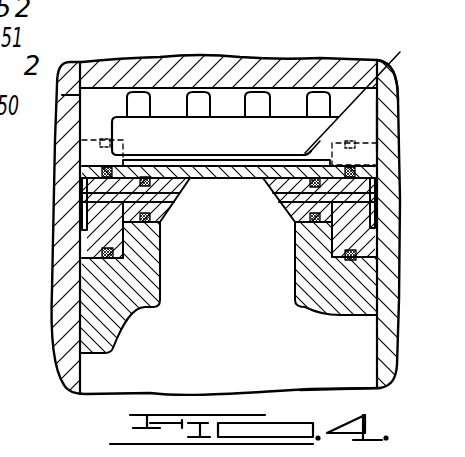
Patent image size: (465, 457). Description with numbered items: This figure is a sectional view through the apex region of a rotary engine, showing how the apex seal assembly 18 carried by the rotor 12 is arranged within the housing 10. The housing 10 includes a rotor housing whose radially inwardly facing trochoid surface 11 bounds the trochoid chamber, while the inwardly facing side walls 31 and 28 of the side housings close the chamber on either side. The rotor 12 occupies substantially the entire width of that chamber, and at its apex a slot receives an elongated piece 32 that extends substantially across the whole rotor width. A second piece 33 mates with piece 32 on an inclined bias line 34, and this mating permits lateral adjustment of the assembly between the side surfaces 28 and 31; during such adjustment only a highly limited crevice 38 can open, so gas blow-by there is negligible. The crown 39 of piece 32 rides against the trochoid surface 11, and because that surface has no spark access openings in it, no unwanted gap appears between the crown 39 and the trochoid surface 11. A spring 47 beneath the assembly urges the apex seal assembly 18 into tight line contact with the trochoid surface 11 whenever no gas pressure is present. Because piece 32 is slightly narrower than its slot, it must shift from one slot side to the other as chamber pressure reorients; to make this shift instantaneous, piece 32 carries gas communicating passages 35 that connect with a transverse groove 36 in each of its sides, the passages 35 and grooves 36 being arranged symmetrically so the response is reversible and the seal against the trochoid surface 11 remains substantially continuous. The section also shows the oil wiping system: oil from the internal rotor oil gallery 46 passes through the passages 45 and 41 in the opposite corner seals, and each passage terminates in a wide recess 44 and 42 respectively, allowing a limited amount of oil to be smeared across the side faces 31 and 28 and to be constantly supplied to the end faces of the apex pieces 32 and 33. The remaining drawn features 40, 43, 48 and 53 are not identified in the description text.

The housing 10 is at (117, 56).
The trochoid surface 11 is at (178, 89).
The rotor 12 is at (350, 352).
The apex seal assembly 18 is at (343, 90).
The side wall 28 is at (378, 150).
The side wall 31 is at (82, 133).
The elongated piece 32 is at (250, 110).
The piece 33 is at (363, 125).
The bias line 34 is at (393, 90).
The gas communicating passages 35 is at (140, 90).
The transverse groove 36 is at (147, 127).
The crevice 38 is at (363, 88).
The crown 39 is at (236, 98).
The piston ring 40 is at (353, 237).
The passage 41 is at (358, 202).
The recess 42 is at (375, 222).
The piston body 43 is at (90, 237).
The recess 44 is at (85, 220).
The passage 45 is at (167, 200).
The internal rotor oil gallery 46 is at (297, 272).
The spring 47 is at (247, 172).
The seal 48 is at (212, 165).
The edge 53 is at (330, 127).